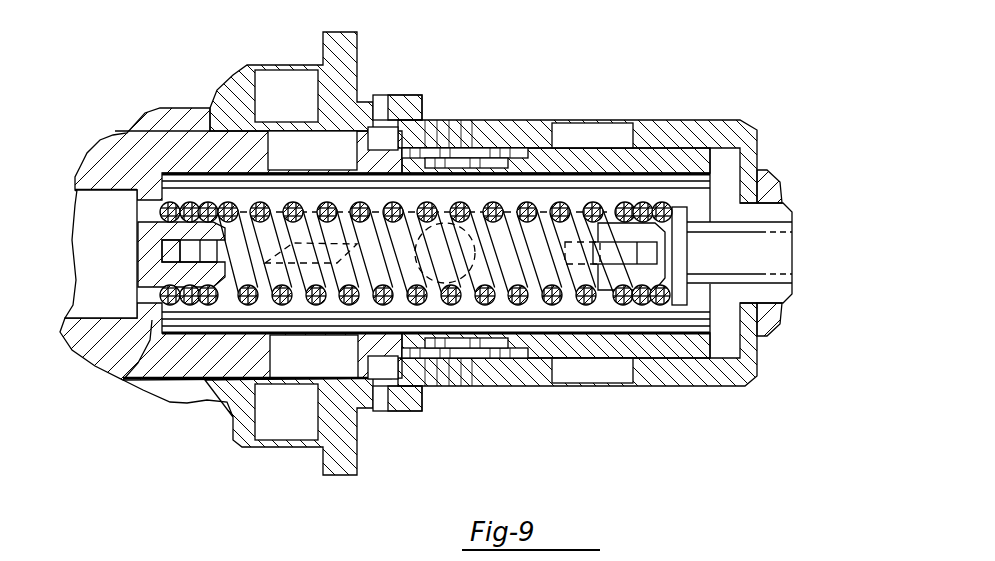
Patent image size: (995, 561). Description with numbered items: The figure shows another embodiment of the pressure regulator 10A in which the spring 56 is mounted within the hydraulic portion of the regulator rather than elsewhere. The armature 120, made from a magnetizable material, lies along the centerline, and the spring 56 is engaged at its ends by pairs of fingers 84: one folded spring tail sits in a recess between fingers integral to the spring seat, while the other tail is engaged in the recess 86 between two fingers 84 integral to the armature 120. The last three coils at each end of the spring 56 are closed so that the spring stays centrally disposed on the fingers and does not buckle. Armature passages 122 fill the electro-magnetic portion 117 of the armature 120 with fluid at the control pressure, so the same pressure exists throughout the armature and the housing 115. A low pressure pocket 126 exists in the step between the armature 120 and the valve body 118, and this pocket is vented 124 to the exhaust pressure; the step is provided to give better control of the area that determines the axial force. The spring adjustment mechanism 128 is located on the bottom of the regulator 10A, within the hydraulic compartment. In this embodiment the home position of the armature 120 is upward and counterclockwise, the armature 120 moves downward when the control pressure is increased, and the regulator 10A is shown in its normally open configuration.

The regulator 10A is at (468, 258).
The spring 56 is at (526, 210).
The fingers 84 is at (636, 230).
The recess 86 is at (190, 232).
The housing 115 is at (718, 42).
The electro-magnetic portion 117 is at (106, 228).
The valve body 118 is at (656, 380).
The armature 120 is at (722, 384).
The armature passages 122 is at (123, 379).
The vent 124 is at (385, 110).
The low pressure pocket 126 is at (388, 138).
The spring adjustment mechanism 128 is at (767, 248).